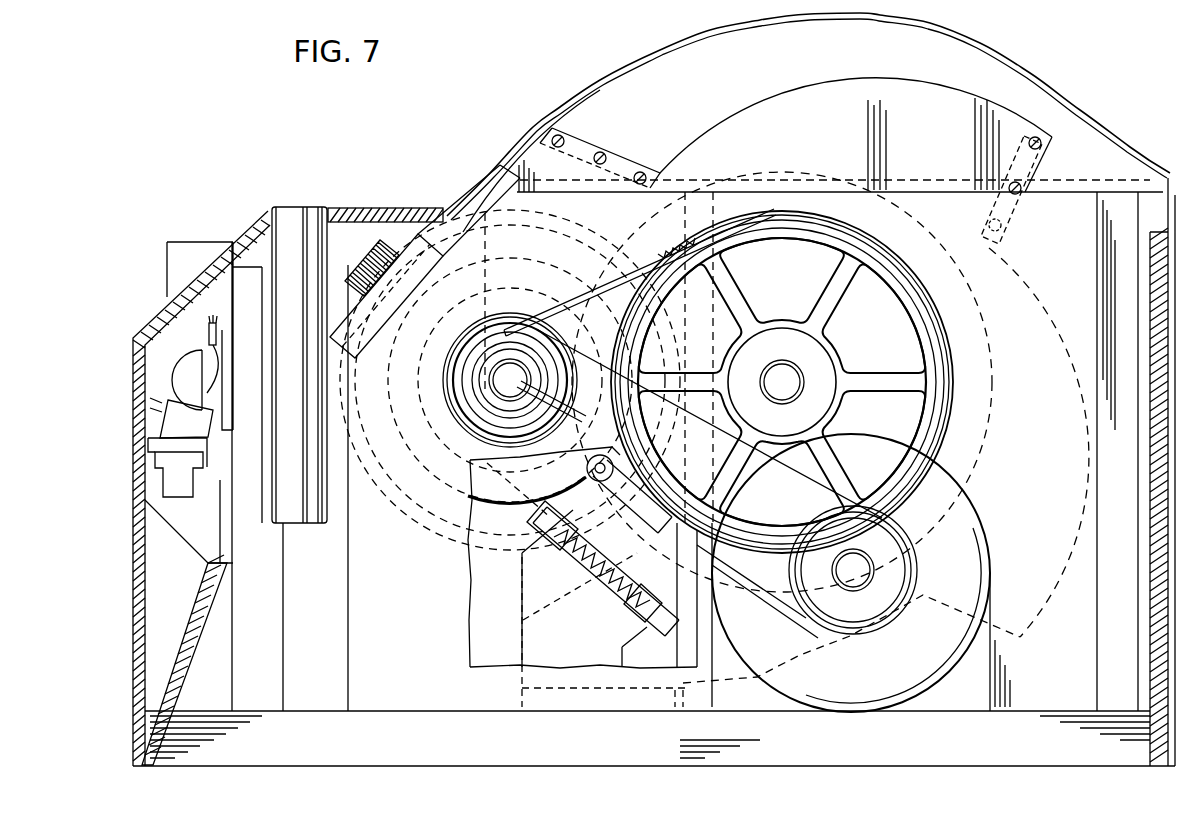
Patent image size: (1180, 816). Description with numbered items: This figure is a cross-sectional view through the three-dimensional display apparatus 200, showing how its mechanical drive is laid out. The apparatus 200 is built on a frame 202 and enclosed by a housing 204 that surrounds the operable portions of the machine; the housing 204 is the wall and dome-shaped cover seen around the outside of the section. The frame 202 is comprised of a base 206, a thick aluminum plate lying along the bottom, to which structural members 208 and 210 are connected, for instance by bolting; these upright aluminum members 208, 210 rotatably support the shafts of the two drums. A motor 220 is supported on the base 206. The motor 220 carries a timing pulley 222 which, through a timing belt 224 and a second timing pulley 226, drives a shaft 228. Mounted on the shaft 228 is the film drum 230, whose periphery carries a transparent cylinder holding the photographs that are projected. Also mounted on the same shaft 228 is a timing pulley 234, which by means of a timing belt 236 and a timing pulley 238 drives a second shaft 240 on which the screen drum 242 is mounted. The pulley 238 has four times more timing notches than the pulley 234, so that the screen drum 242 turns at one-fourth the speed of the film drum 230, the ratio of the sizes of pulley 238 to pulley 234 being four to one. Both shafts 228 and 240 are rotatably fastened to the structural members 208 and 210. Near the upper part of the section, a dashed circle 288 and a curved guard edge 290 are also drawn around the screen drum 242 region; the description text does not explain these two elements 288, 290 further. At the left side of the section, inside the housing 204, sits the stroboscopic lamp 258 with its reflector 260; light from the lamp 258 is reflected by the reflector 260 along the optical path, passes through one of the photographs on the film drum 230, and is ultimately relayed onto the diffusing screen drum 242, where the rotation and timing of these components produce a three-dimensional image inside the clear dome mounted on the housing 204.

The apparatus 200 is at (460, 158).
The frame 202 is at (247, 762).
The housing 204 is at (131, 703).
The base 206 is at (414, 762).
The structural member 208 is at (1137, 611).
The structural member 210 is at (424, 611).
The motor 220 is at (880, 677).
The timing pulley 222 is at (897, 580).
The timing belt 224 is at (792, 613).
The timing pulley 226 is at (495, 333).
The shaft 228 is at (545, 389).
The film drum 230 is at (428, 233).
The timing pulley 234 is at (467, 397).
The timing belt 236 is at (607, 266).
The timing pulley 238 is at (933, 380).
The shaft 240 is at (790, 372).
The screen drum 242 is at (876, 78).
The stroboscopic lamp 258 is at (211, 346).
The reflector 260 is at (196, 378).
The blade circle 288 is at (796, 178).
The guard edge 290 is at (792, 97).